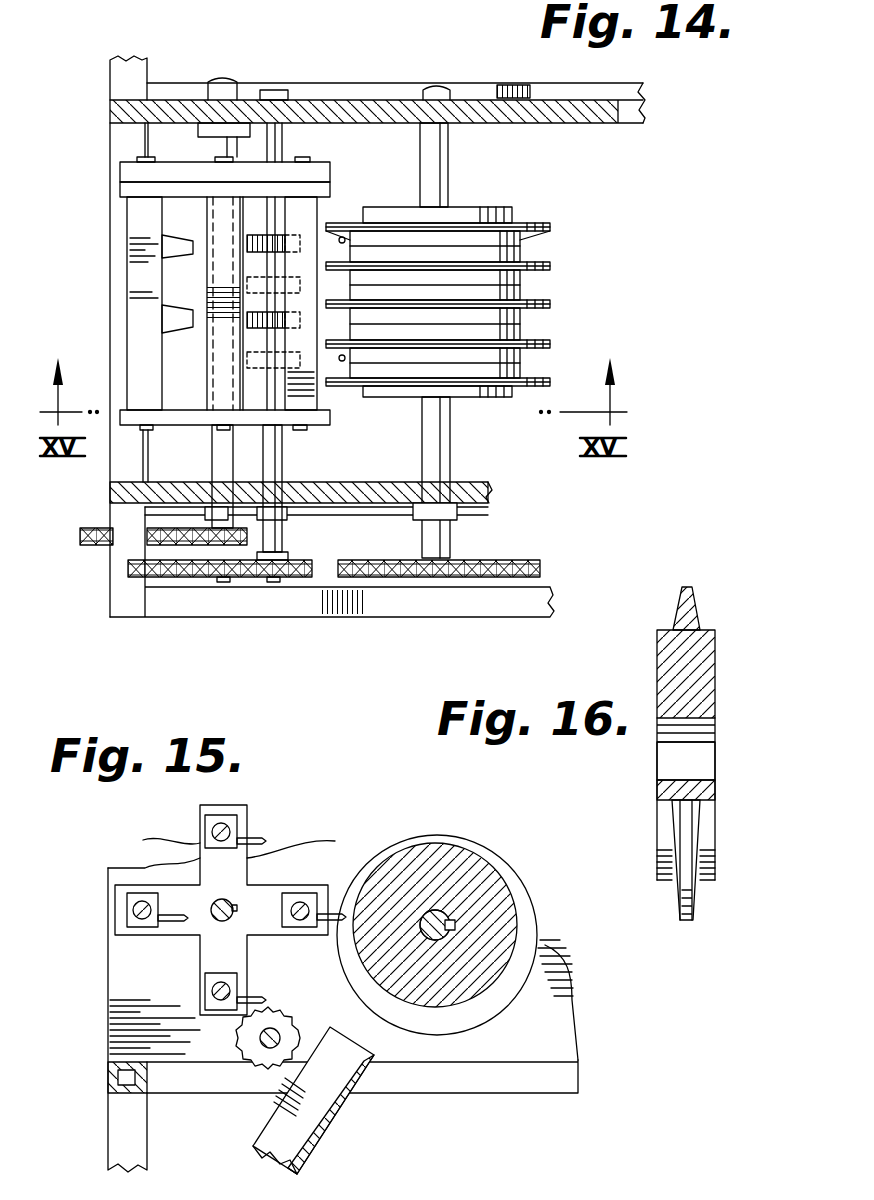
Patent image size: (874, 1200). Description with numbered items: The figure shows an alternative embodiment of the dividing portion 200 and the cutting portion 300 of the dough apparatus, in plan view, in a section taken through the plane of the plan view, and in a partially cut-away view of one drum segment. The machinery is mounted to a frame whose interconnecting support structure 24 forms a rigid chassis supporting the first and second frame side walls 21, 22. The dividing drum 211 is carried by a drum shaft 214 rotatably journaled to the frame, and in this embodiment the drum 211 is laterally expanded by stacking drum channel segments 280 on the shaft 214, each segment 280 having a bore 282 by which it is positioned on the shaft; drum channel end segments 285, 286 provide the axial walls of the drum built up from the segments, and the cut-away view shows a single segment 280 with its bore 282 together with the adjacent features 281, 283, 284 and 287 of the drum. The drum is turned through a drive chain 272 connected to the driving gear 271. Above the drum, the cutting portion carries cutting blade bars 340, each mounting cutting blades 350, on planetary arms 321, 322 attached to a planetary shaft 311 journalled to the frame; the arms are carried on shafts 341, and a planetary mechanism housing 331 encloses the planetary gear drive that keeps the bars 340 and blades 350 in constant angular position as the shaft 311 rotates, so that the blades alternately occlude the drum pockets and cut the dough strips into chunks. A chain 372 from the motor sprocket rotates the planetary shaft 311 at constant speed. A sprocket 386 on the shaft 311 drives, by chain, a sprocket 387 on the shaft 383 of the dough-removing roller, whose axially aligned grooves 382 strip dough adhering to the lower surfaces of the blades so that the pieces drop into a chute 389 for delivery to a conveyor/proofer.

In FIG. 14, the cutting portion 300 is at (101, 122).
In FIG. 15, the cutting portion 300 is at (257, 795).
In FIG. 14, the planetary mechanism housing 331 is at (170, 165).
In FIG. 14, the drum shaft 214 is at (425, 138).
In FIG. 15, the drum shaft 214 is at (434, 908).
In FIG. 14, the first frame side wall 21 is at (488, 110).
In FIG. 15, the first frame side wall 21 is at (130, 968).
In FIG. 14, the interconnecting support structure 24 is at (643, 92).
In FIG. 15, the interconnecting support structure 24 is at (577, 1088).
In FIG. 14, the upper cross member 322 is at (135, 186).
In FIG. 14, the planetary arm 321 is at (128, 415).
In FIG. 14, the cutting blade bar 340 is at (135, 333).
In FIG. 15, the cutting blade bar 340 is at (142, 893).
In FIG. 14, the cutting blade 350 is at (247, 297).
In FIG. 15, the cutting blade 350 is at (265, 840).
In FIG. 14, the axially aligned grooves 382 is at (252, 238).
In FIG. 15, the axially aligned grooves 382 is at (255, 1043).
In FIG. 14, the pulley flange 281 is at (342, 238).
In FIG. 14, the drum channel end segment 285 is at (470, 215).
In FIG. 14, the drum channel end segment 286 is at (466, 393).
In FIG. 14, the pulley rim 287 is at (538, 243).
In FIG. 14, the drum channel segment 280 is at (548, 312).
In FIG. 16, the drum channel segment 280 is at (700, 640).
In FIG. 14, the dividing drum 211 is at (558, 256).
In FIG. 15, the dividing drum 211 is at (535, 877).
In FIG. 14, the dividing portion 200 is at (590, 345).
In FIG. 15, the dividing portion 200 is at (548, 997).
In FIG. 14, the second frame side wall 22 is at (492, 490).
In FIG. 14, the driving gear 271 is at (525, 558).
In FIG. 14, the drive chain 272 is at (490, 578).
In FIG. 14, the chain 372 is at (300, 565).
In FIG. 14, the sprocket 386 is at (130, 642).
In FIG. 14, the sprocket 387 is at (262, 570).
In FIG. 15, the planetary shaft 311 is at (217, 918).
In FIG. 15, the shaft 341 is at (205, 992).
In FIG. 15, the shaft 383 is at (265, 1045).
In FIG. 15, the chute 389 is at (313, 1135).
In FIG. 16, the pulley tooth 283 is at (688, 603).
In FIG. 16, the bore 282 is at (697, 760).
In FIG. 16, the pulley tip 284 is at (686, 920).